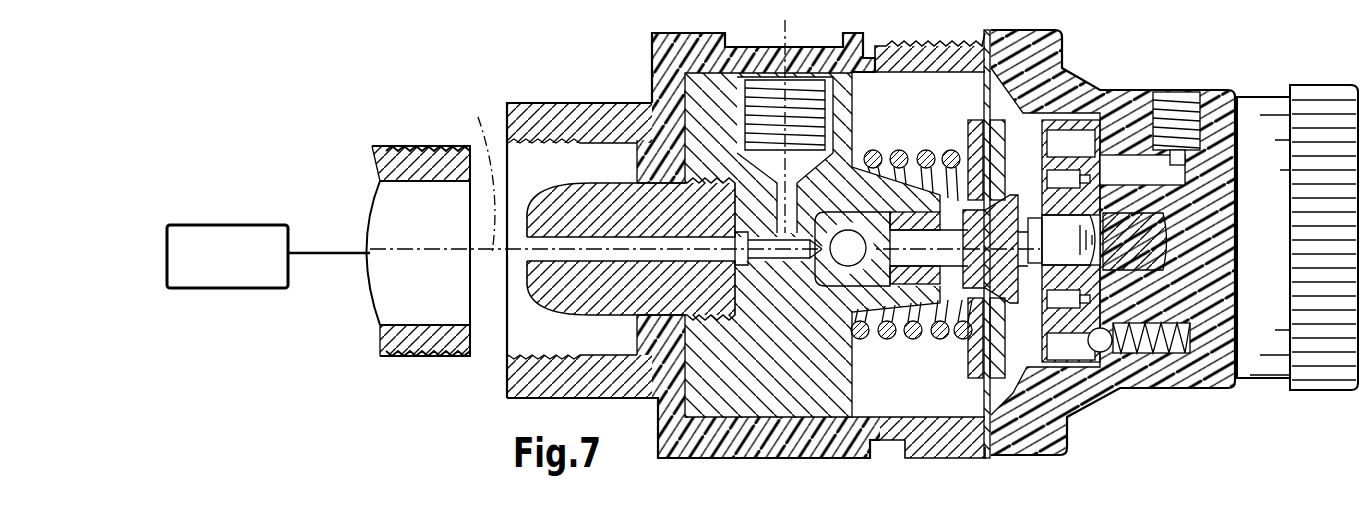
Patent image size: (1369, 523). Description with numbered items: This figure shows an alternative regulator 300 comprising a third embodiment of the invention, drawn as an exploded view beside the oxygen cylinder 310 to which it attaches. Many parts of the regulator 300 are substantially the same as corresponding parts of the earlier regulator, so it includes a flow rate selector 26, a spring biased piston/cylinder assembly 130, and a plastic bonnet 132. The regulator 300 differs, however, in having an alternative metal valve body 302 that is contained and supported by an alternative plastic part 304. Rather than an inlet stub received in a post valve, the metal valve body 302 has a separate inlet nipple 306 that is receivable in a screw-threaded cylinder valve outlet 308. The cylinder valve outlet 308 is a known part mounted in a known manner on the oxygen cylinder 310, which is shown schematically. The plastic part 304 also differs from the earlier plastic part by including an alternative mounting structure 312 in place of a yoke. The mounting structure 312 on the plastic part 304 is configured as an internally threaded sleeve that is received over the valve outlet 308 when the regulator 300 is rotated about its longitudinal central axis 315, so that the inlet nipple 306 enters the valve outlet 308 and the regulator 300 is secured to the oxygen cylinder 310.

The flow rate selector 26 is at (1305, 85).
The spring biased piston/cylinder assembly 130 is at (948, 380).
The plastic bonnet 132 is at (1153, 375).
The regulator 300 is at (556, 40).
The metal valve body 302 is at (763, 392).
The plastic part 304 is at (672, 35).
The inlet nipple 306 is at (505, 313).
The cylinder valve outlet 308 is at (390, 147).
The oxygen cylinder 310 is at (220, 225).
The mounting structure 312 is at (550, 127).
The longitudinal central axis 315 is at (478, 171).